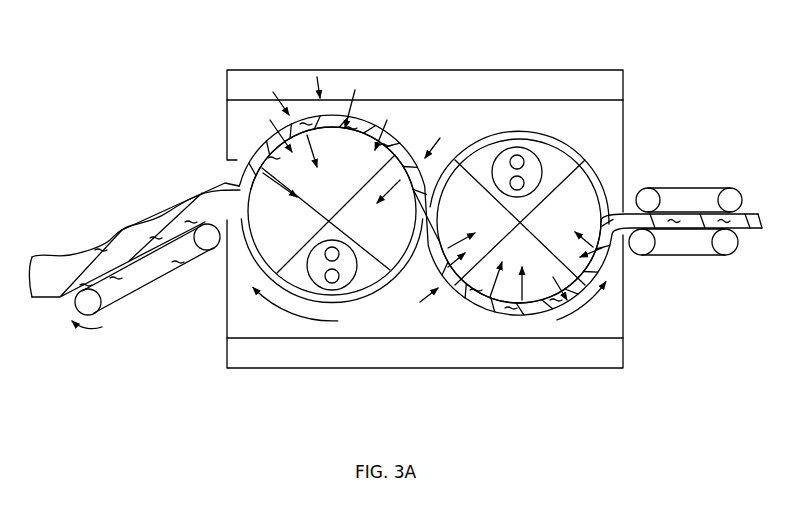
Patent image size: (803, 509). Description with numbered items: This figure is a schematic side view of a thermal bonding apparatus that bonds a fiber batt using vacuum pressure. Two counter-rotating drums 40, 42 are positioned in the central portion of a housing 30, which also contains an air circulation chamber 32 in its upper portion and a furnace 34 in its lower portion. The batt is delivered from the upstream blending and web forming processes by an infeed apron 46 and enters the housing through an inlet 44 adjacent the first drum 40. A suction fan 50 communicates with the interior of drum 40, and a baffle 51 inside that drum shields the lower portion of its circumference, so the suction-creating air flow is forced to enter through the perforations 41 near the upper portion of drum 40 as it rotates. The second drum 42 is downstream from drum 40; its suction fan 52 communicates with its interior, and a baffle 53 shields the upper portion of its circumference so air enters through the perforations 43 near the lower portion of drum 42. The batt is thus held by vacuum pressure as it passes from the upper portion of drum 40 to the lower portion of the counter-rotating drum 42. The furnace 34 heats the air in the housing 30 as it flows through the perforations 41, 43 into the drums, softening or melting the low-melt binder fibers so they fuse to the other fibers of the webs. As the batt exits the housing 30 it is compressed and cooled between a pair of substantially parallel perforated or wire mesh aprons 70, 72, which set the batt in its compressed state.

The housing 30 is at (625, 115).
The air circulation chamber 32 is at (478, 87).
The furnace 34 is at (530, 352).
The drum 40 is at (252, 262).
The perforations 41 is at (358, 140).
The drum 42 is at (602, 186).
The perforations 43 is at (537, 295).
The inlet 44 is at (235, 168).
The infeed apron 46 is at (146, 281).
The suction fan 50 is at (350, 284).
The baffle 51 is at (367, 280).
The suction fan 52 is at (533, 162).
The baffle 53 is at (571, 148).
The first perforated apron 70 is at (706, 188).
The second perforated apron 72 is at (690, 255).